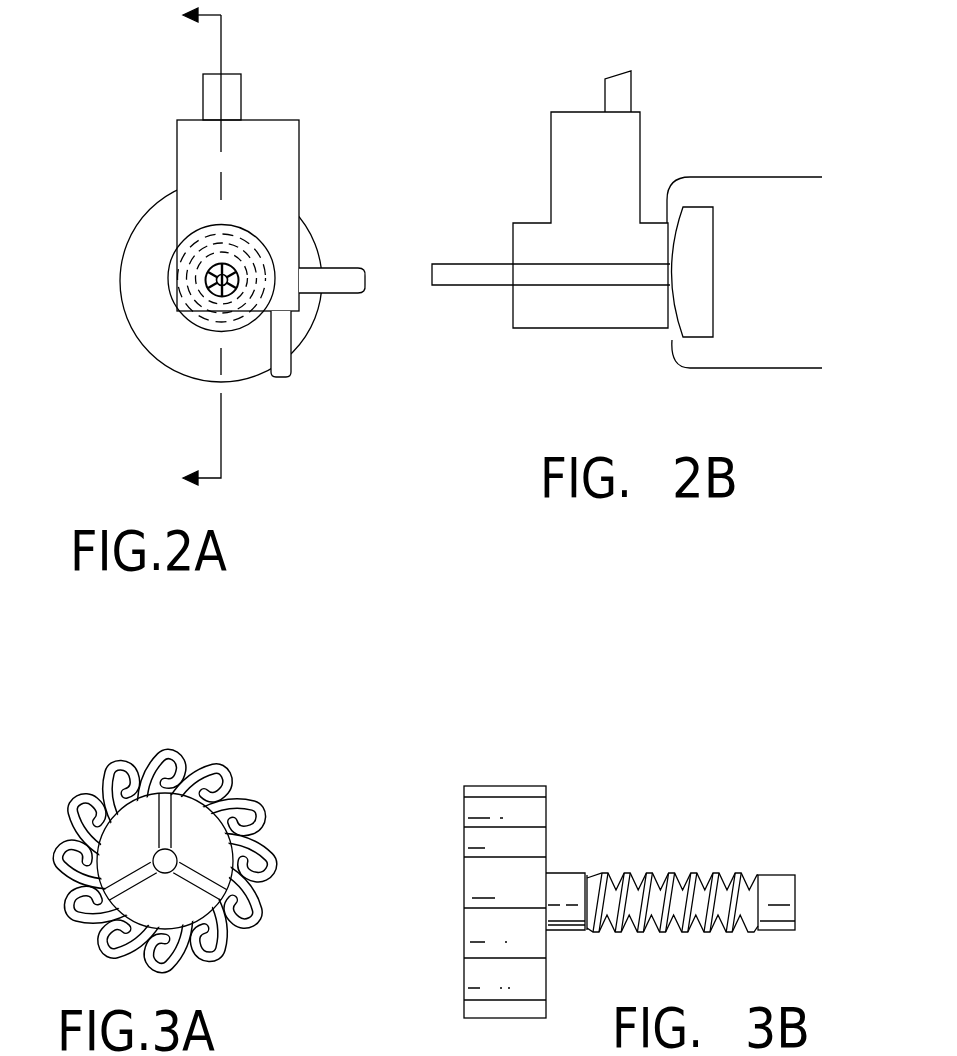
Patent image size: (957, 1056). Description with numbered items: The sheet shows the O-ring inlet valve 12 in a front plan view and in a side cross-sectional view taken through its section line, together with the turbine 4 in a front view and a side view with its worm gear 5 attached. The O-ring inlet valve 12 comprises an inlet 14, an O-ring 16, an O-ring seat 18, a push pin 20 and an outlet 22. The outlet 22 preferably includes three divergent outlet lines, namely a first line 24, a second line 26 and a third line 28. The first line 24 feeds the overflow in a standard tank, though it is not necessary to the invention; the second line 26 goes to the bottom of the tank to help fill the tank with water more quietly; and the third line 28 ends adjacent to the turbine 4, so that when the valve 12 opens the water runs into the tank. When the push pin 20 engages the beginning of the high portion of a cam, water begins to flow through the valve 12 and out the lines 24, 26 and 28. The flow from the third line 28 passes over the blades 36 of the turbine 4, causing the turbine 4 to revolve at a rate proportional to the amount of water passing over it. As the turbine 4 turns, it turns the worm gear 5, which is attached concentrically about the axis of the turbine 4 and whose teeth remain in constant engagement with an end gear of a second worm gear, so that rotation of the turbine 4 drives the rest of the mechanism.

In FIG. 3A, the turbine 4 is at (204, 833).
In FIG. 3B, the turbine 4 is at (465, 978).
In FIG. 3B, the worm gear 5 is at (648, 877).
In FIG. 2A, the O-ring inlet valve 12 is at (334, 148).
In FIG. 2B, the O-ring inlet valve 12 is at (738, 107).
In FIG. 2B, the inlet 14 is at (744, 270).
In FIG. 2B, the O-ring 16 is at (698, 330).
In FIG. 2A, the O-ring seat 18 is at (153, 338).
In FIG. 2B, the O-ring seat 18 is at (668, 203).
In FIG. 2A, the push pin 20 is at (212, 278).
In FIG. 2B, the push pin 20 is at (465, 277).
In FIG. 2A, the outlet 22 is at (283, 205).
In FIG. 2B, the outlet 22 is at (565, 192).
In FIG. 2A, the first line 24 is at (332, 290).
In FIG. 2A, the second line 26 is at (288, 360).
In FIG. 2A, the third line 28 is at (233, 92).
In FIG. 2B, the third line 28 is at (612, 102).
In FIG. 3A, the blades 36 is at (268, 895).